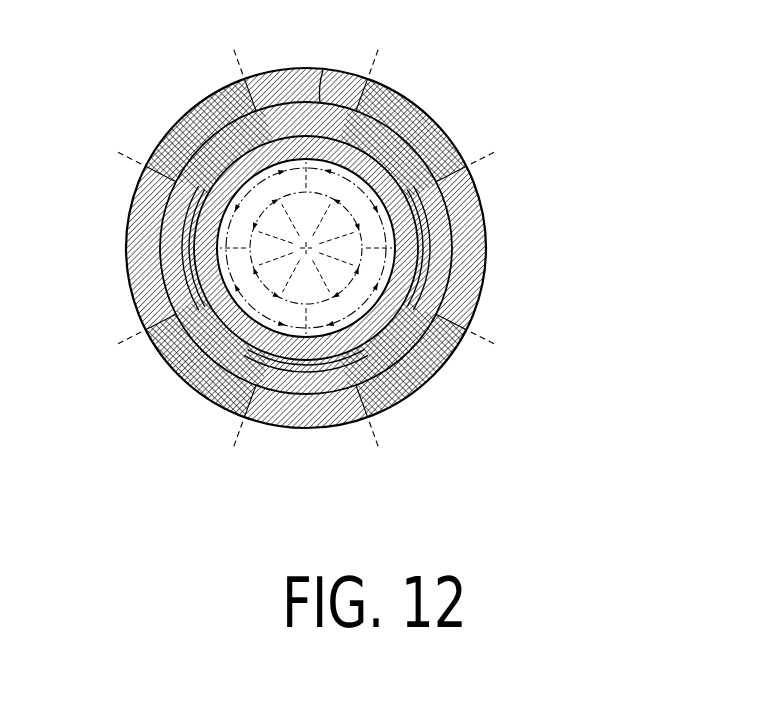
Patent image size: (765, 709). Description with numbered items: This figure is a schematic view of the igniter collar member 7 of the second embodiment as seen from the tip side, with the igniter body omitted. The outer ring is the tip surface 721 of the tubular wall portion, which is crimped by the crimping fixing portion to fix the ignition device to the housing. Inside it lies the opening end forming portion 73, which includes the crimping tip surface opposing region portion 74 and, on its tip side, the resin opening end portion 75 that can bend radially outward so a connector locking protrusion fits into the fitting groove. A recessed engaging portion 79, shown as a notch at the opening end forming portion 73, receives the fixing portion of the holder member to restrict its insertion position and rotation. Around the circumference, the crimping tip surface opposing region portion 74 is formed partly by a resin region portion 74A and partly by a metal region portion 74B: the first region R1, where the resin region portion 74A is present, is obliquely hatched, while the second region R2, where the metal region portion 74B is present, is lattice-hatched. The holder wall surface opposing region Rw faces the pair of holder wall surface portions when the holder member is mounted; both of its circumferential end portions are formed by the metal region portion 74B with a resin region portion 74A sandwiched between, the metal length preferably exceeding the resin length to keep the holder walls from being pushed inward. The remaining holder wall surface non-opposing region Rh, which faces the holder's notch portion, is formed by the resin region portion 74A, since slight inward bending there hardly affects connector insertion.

The igniter collar member 7 is at (308, 262).
The engaging portion 79 is at (323, 70).
The tip surface 721 is at (128, 216).
The opening end forming portion 73 is at (413, 102).
The opening end portion 75 is at (445, 367).
The crimping tip surface opposing region portion 74 is at (304, 428).
The resin region portion 74A is at (127, 266).
The metal region portion 74B is at (205, 95).
The first region R1 is at (370, 492).
The second region R2 is at (400, 440).
The holder wall surface opposing region Rw is at (306, 248).
The holder wall surface non-opposing region Rh is at (307, 246).